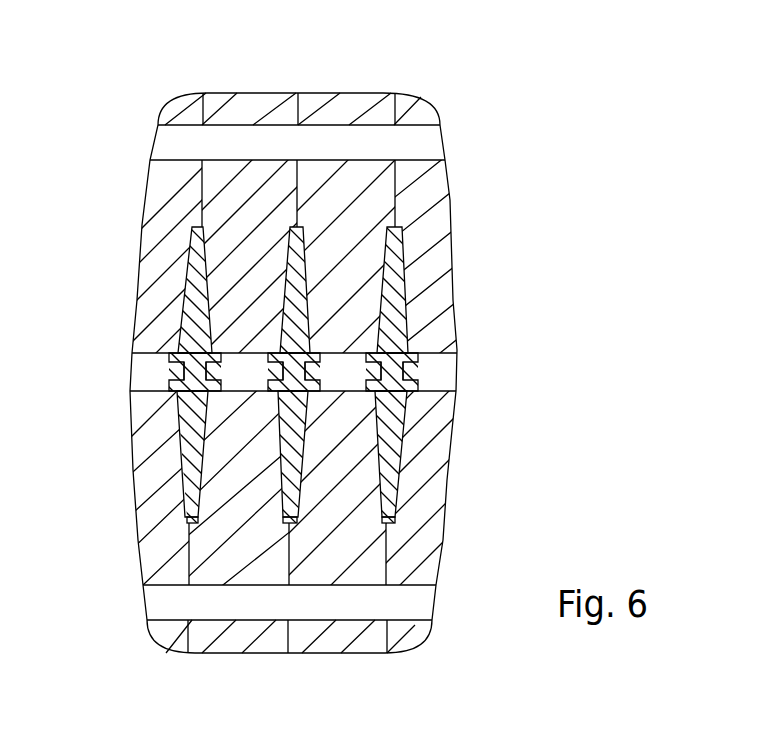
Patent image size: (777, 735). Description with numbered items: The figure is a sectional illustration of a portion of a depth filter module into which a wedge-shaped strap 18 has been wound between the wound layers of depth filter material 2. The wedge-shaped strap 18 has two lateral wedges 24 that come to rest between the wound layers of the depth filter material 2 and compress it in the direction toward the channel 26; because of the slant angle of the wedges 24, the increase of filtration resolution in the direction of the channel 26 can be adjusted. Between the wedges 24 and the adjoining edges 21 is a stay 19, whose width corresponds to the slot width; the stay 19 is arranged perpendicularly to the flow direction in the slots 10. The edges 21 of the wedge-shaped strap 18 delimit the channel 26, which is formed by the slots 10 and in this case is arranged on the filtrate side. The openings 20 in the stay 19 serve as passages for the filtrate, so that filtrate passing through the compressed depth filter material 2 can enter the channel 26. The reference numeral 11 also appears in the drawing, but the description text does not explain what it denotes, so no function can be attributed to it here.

The depth filter material 2 is at (400, 112).
The slots 10 is at (138, 375).
The sealing layer 11 is at (180, 145).
The wedge-shaped strap 18 is at (188, 515).
The stay 19 is at (410, 370).
The openings 20 is at (406, 400).
The edges 21 is at (407, 353).
The wedges 24 is at (192, 253).
The channel 26 is at (262, 140).